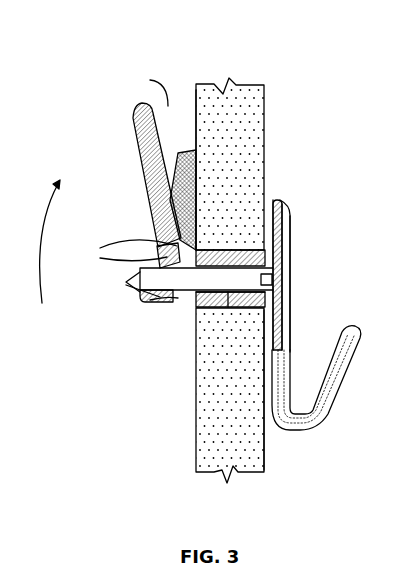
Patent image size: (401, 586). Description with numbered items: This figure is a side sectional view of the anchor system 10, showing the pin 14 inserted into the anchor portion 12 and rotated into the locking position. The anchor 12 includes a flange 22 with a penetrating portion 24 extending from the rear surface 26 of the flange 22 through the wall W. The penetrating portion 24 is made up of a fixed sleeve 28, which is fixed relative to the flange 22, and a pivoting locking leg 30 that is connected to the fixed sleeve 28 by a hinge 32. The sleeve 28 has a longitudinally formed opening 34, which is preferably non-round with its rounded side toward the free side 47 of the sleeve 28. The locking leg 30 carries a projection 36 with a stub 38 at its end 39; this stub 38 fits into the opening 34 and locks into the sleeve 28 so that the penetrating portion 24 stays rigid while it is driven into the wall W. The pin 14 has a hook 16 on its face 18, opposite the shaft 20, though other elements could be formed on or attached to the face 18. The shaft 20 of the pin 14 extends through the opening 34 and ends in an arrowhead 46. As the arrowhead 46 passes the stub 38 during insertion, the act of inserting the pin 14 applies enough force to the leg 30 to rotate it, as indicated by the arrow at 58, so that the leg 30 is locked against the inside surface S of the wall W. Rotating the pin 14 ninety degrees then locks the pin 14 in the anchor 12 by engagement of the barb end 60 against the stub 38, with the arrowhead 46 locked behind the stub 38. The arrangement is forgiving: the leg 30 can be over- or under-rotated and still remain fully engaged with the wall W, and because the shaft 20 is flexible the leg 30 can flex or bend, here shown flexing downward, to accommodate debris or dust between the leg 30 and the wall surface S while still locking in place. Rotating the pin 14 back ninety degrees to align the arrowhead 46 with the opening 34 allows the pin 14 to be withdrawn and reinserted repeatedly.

The wall W is at (222, 86).
The inside surface of the wall S is at (196, 99).
The anchor system 10 is at (283, 186).
The anchor portion 12 is at (213, 308).
The pin 14 is at (302, 247).
The hook 16 is at (303, 432).
The face of the pin 18 is at (292, 284).
The shaft 20 is at (242, 290).
The flange 22 is at (264, 338).
The penetrating portion 24 is at (168, 110).
The rear surface of the flange 26 is at (258, 222).
The fixed sleeve 28 is at (232, 250).
The pivoting locking leg 30 is at (143, 135).
The hinge 32 is at (167, 295).
The opening 34 is at (227, 307).
The projection 36 is at (157, 240).
The stub 38 is at (126, 281).
The end of the projection 39 is at (167, 250).
The arrowhead 46 is at (150, 296).
The free side of the sleeve 47 is at (198, 300).
The arrow indicating leg rotation 58 is at (37, 253).
The barb end 60 is at (153, 250).